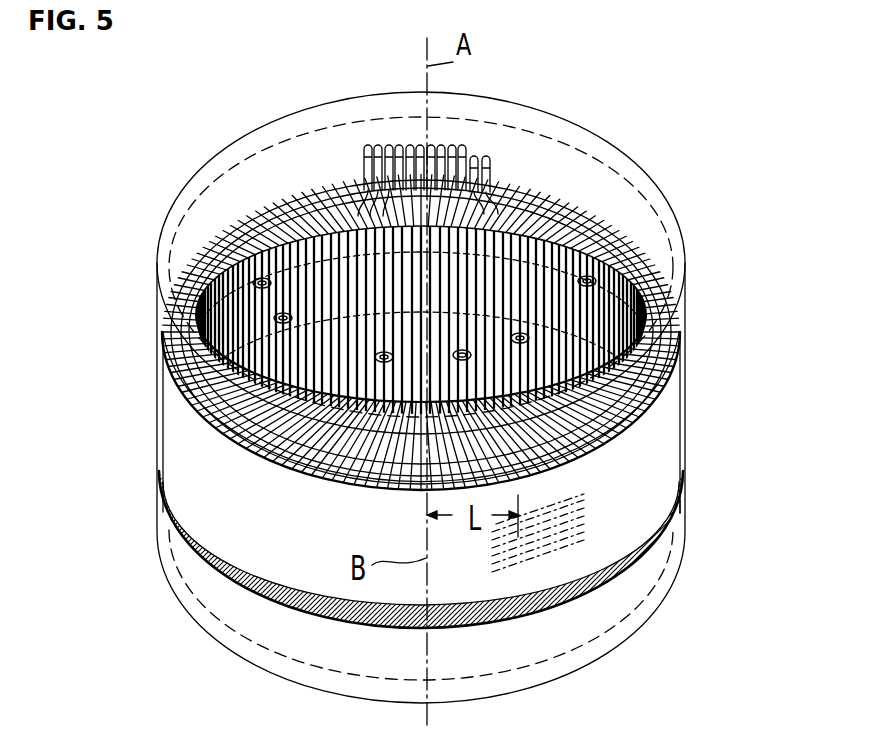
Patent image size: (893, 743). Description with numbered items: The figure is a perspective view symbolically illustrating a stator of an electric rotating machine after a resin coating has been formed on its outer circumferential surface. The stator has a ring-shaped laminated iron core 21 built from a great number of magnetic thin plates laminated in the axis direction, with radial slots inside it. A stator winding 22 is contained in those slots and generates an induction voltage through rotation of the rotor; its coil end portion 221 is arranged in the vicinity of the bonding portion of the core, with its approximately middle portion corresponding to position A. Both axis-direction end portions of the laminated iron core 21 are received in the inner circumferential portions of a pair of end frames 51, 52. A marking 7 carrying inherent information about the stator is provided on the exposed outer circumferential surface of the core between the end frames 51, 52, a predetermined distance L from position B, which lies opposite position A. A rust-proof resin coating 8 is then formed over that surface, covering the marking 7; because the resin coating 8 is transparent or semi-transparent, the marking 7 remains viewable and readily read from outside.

The marking 7 is at (531, 572).
The resin coating 8 is at (245, 520).
The laminated iron core 21 is at (660, 450).
The stator winding 22 is at (556, 216).
The coil end portion 221 is at (447, 135).
The end frame 51 is at (615, 146).
The end frame 52 is at (668, 590).